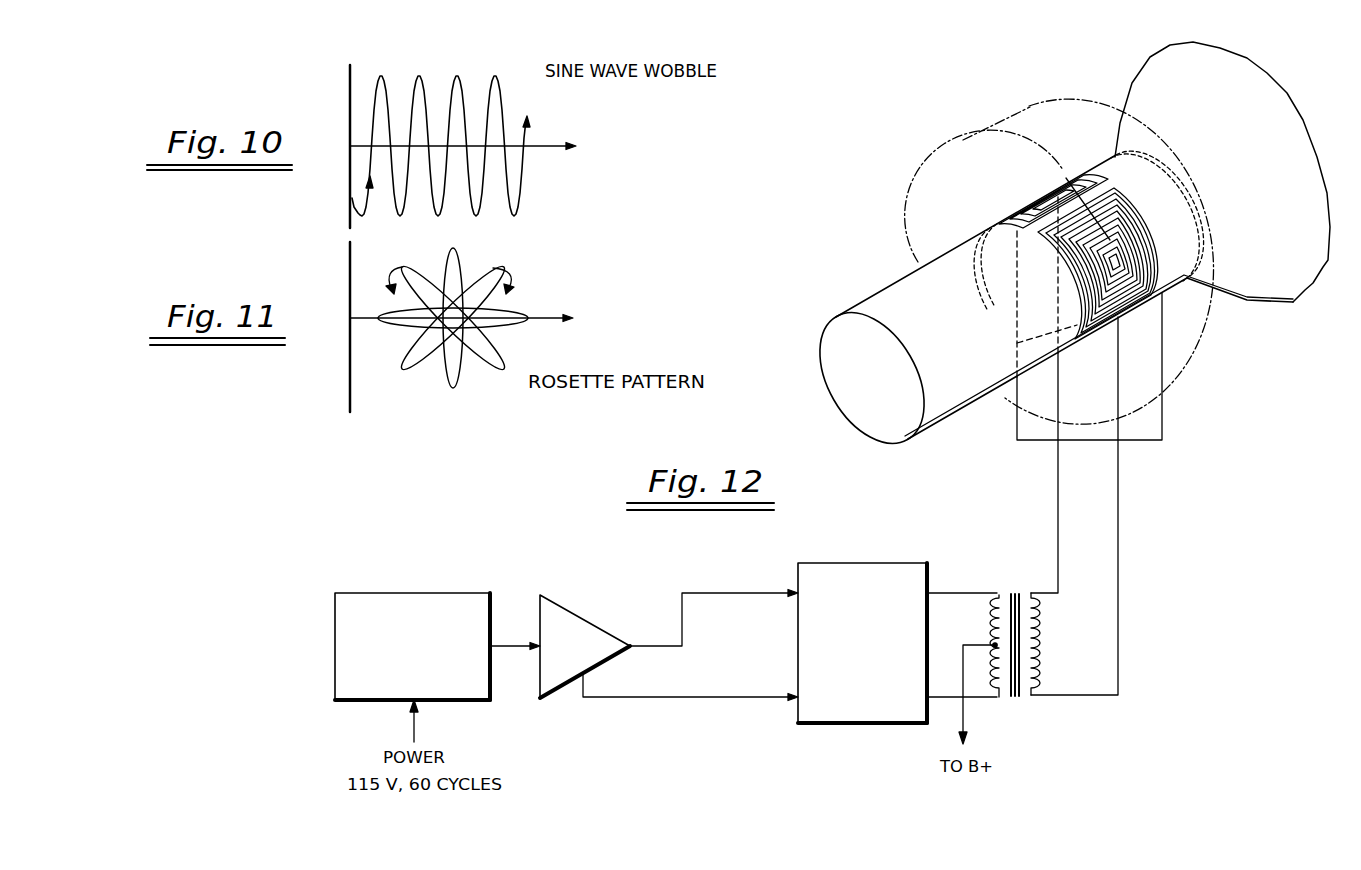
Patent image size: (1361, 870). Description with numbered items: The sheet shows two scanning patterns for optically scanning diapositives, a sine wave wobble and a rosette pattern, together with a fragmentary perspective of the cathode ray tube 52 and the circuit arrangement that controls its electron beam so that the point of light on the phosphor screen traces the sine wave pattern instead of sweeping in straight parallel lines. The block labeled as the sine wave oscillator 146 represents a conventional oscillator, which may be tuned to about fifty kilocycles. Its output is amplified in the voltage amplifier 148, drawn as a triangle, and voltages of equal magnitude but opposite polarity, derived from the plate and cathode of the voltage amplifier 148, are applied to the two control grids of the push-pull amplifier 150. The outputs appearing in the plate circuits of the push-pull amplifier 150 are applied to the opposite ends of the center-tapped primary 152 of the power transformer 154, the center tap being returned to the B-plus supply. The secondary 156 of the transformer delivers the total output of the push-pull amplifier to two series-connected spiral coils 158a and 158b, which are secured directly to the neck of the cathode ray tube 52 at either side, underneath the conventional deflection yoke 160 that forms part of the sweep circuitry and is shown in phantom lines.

The cathode ray tube 52 is at (868, 288).
The sine wave oscillator 146 is at (458, 602).
The voltage amplifier 148 is at (587, 630).
The push-pull amplifier 150 is at (832, 563).
The center-tapped primary 152 is at (1002, 700).
The power transformer 154 is at (1017, 573).
The secondary 156 is at (1043, 619).
The spiral coil 158a is at (1024, 199).
The spiral coil 158b is at (1166, 237).
The deflection yoke 160 is at (1212, 338).